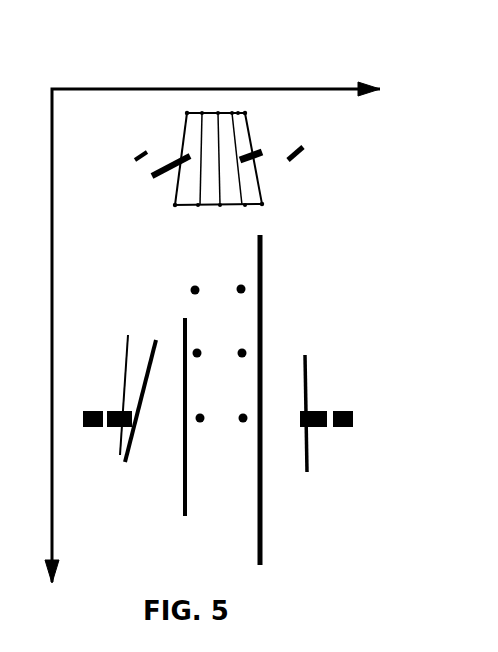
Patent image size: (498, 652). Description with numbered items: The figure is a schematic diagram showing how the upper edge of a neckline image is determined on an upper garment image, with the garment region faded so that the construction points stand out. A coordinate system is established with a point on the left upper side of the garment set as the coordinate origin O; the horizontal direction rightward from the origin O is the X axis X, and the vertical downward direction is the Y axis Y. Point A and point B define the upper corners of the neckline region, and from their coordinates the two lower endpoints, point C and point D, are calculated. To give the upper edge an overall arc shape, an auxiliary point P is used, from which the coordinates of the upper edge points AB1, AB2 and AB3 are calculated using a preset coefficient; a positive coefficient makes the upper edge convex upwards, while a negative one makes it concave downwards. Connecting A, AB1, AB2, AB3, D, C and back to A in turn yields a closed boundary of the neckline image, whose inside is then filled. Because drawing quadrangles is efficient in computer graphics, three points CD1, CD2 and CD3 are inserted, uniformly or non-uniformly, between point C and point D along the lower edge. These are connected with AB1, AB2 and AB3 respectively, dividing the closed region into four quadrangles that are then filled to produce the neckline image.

The coordinate origin O is at (209, 322).
The X axis X is at (371, 77).
The Y axis Y is at (44, 562).
The point A is at (203, 112).
The point B is at (254, 151).
The point C is at (171, 172).
The point D is at (232, 216).
The auxiliary point P is at (218, 100).
The upper edge point AB1 is at (202, 110).
The upper edge point AB2 is at (232, 112).
The upper edge point AB3 is at (238, 111).
The inserted point CD1 is at (198, 207).
The inserted point CD2 is at (220, 207).
The inserted point CD3 is at (245, 207).